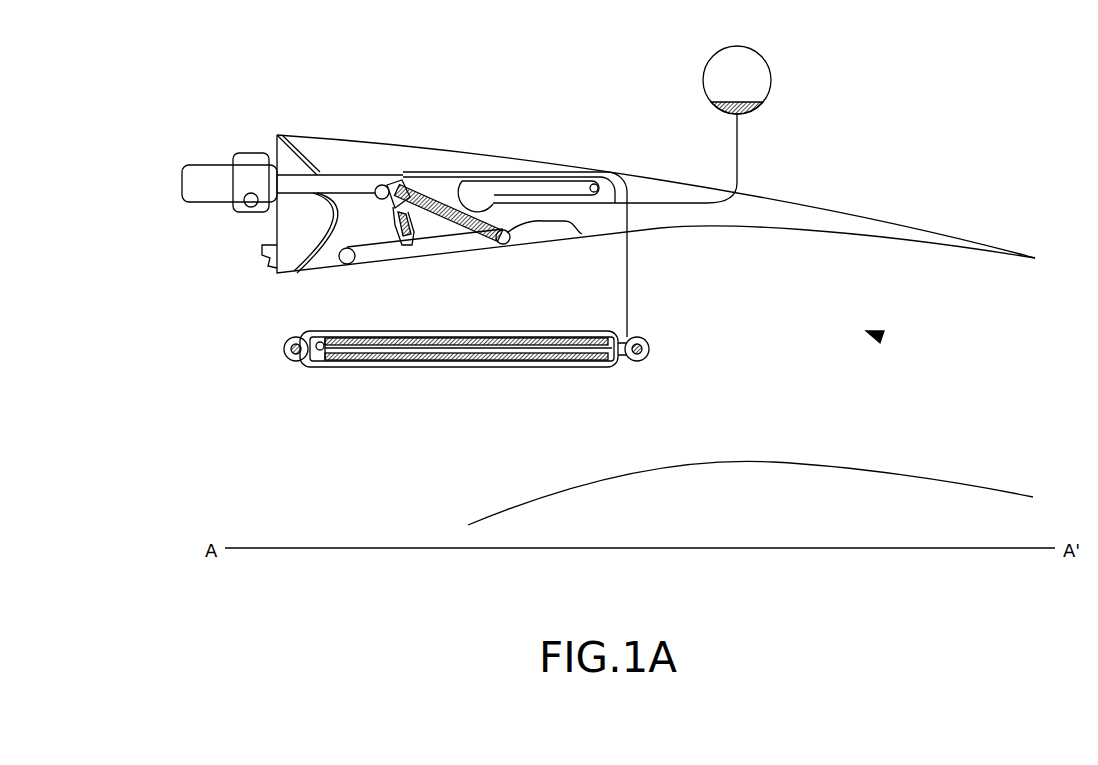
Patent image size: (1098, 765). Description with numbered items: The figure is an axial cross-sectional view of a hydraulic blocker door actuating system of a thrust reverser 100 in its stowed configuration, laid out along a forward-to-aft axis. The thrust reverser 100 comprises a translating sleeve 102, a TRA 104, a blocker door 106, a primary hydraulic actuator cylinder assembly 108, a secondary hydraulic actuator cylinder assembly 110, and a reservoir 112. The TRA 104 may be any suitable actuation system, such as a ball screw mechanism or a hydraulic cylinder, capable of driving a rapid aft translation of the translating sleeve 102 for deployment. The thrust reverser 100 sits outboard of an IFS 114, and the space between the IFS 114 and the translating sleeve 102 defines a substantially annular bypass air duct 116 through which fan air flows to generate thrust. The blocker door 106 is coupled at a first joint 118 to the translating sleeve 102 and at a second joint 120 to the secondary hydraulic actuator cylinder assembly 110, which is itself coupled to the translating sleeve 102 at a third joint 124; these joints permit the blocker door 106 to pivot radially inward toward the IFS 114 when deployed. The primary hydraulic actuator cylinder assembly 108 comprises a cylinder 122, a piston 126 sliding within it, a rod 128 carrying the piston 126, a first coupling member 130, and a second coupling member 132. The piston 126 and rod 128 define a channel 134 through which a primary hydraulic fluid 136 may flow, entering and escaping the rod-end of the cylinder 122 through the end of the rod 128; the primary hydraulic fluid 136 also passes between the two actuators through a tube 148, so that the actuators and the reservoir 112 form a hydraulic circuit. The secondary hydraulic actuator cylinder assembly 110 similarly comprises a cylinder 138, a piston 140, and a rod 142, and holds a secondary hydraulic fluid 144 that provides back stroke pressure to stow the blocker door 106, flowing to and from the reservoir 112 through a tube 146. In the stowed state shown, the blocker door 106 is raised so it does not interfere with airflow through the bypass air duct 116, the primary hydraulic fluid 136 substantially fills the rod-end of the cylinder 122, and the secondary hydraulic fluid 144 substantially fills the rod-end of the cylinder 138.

The thrust reverser 100 is at (195, 58).
The translating sleeve 102 is at (330, 137).
The TRA 104 is at (405, 173).
The blocker door 106 is at (440, 245).
The primary hydraulic actuator cylinder assembly 108 is at (397, 380).
The secondary hydraulic actuator cylinder assembly 110 is at (410, 250).
The reservoir 112 is at (760, 62).
The IFS 114 is at (945, 482).
The bypass air duct 116 is at (880, 337).
The first hinge or joint 118 is at (345, 266).
The second hinge or joint 120 is at (582, 234).
The cylinder 122 is at (337, 367).
The third joint 124 is at (381, 186).
The piston 126 is at (460, 367).
The rod 128 is at (370, 367).
The first coupling member 130 is at (284, 352).
The second coupling member 132 is at (650, 350).
The channel 134 is at (512, 367).
The primary hydraulic fluid 136 is at (573, 367).
The cylinder 138 is at (460, 243).
The piston 140 is at (393, 228).
The rod 142 is at (500, 244).
The secondary hydraulic fluid 144 is at (440, 175).
The tube 146 is at (738, 160).
The tube 148 is at (627, 305).